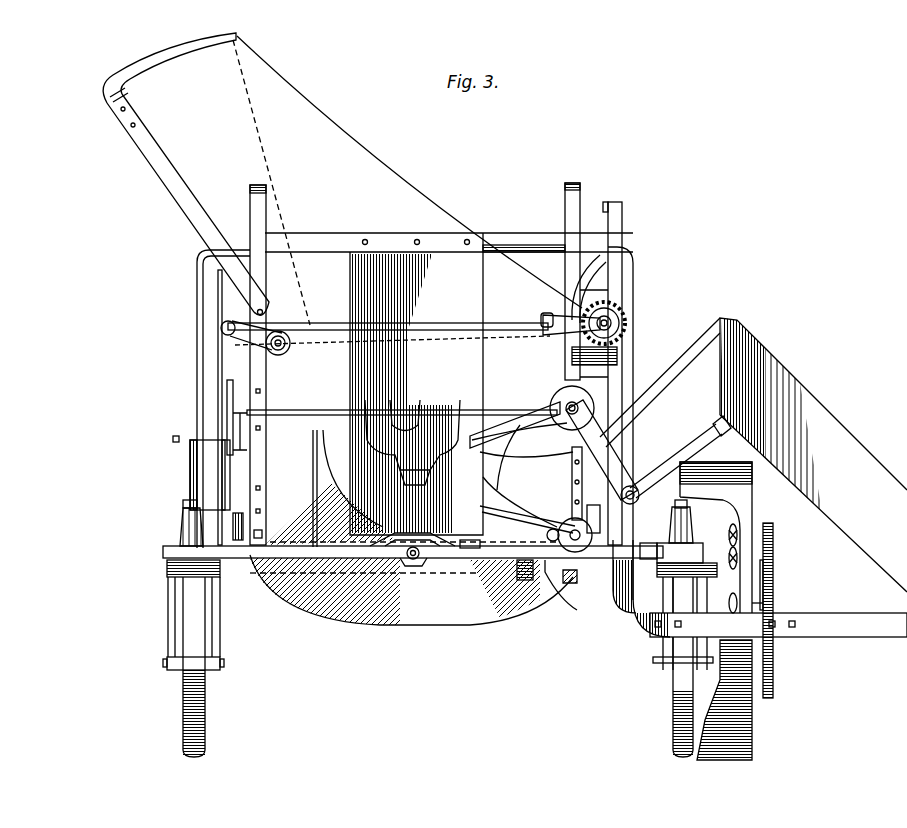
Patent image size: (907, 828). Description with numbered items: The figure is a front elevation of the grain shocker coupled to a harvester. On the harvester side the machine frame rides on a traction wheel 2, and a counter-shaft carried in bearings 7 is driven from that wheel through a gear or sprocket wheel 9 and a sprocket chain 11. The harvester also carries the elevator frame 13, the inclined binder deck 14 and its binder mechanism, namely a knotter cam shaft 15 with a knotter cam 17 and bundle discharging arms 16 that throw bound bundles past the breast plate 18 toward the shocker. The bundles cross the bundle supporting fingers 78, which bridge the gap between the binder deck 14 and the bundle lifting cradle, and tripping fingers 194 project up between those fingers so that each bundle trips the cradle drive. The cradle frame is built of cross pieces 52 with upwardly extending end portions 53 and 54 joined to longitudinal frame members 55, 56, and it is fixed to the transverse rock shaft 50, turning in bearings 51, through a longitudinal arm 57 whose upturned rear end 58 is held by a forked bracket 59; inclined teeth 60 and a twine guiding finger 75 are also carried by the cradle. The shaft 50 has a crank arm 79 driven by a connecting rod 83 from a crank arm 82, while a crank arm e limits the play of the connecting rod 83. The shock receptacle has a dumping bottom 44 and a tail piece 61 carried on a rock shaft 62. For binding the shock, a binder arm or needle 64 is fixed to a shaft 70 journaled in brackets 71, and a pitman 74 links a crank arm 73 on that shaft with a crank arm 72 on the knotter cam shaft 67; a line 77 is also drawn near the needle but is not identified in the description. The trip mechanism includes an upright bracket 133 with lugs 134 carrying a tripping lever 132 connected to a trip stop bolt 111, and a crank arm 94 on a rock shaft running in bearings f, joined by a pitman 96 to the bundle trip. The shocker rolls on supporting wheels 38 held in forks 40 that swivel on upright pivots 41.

The shock binder arm or needle 64 is at (186, 174).
The cable 77 is at (327, 325).
The supporting and operating shaft 70 is at (278, 332).
The bearings 51 is at (266, 392).
The transverse rock shaft 62 is at (517, 232).
The tail piece 61 is at (416, 384).
The pitman or connecting rod 74 is at (225, 327).
The crank arm 72 is at (550, 318).
The knotter cam shaft 67 is at (612, 320).
The crank arm 73 is at (245, 340).
The bearings or brackets 71 is at (279, 350).
The guiding finger 75 is at (313, 361).
The crank arm 79 is at (225, 382).
The connecting rod 83 is at (225, 413).
The crank arm e is at (230, 437).
The upright pivots 41 is at (190, 507).
The crank arm 82 is at (240, 512).
The cross pieces 52 is at (368, 549).
The transverse rock shaft or fulcrum 50 is at (330, 410).
The transversely forked bracket or casting 59 is at (450, 397).
The longitudinal frame member 56 is at (313, 430).
The upwardly extending rear end portion 58 is at (424, 472).
The upwardly extending end portion 53 is at (315, 470).
The knotter cam shaft 15 is at (560, 388).
The bundle discharging arms 16 is at (497, 412).
The knotter cam 17 is at (548, 400).
The upright bracket 133 is at (572, 444).
The lugs 134 is at (575, 468).
The tripping lever 132 is at (586, 492).
The trip stop bar or bolt 111 is at (572, 505).
The tripping fingers 194 is at (527, 503).
The bundle supporting fingers or platform 78 is at (520, 493).
The breast plate 18 is at (645, 388).
The inclined binder deck 14 is at (690, 437).
The elevator frame 13 is at (813, 455).
The traction wheel 2 is at (748, 492).
The sprocket chain 11 is at (773, 550).
The gear or sprocket wheel 9 is at (773, 583).
The bearings 7 is at (838, 626).
The teeth 60 is at (410, 547).
The longitudinal frame member 55 is at (412, 534).
The longitudinally extending arm 57 is at (416, 568).
The upwardly extending end portion 54 is at (470, 549).
The connecting rod or pitman 96 is at (512, 567).
The crank arm 94 is at (566, 588).
The bearings f is at (546, 606).
The dumping bottom 44 is at (481, 625).
The forks 40 is at (222, 664).
The supporting wheels 38 is at (205, 693).